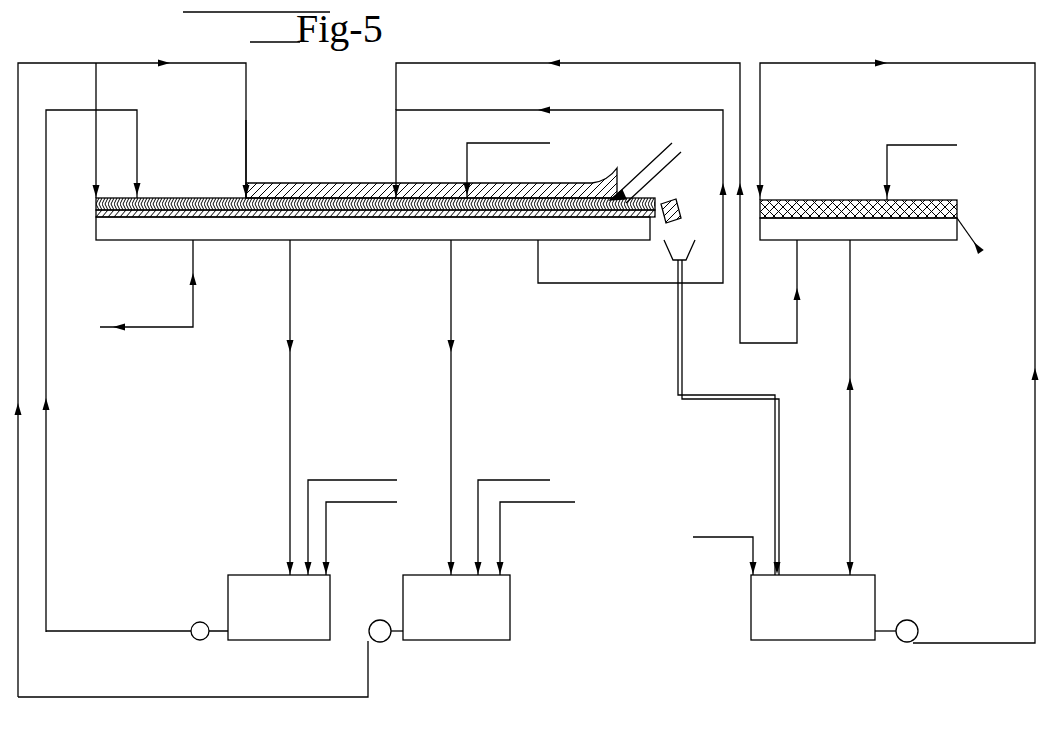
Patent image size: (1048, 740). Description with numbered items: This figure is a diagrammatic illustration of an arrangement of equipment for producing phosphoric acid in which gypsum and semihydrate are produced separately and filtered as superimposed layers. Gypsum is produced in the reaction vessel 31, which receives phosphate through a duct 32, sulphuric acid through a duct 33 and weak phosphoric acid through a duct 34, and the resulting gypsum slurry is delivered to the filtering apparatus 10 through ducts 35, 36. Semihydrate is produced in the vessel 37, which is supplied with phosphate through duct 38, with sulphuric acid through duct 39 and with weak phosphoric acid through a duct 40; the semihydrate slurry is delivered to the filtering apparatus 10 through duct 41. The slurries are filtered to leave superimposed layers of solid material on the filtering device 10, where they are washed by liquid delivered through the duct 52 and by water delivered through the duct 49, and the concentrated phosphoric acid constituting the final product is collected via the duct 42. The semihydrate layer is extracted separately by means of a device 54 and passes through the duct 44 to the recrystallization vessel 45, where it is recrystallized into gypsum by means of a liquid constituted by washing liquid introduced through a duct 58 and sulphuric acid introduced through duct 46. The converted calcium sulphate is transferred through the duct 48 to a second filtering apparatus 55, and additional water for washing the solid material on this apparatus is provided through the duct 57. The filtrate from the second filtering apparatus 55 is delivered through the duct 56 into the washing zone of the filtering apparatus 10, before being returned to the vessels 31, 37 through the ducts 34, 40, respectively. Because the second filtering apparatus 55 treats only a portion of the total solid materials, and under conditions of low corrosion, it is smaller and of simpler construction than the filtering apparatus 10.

The filtering apparatus 10 is at (150, 243).
The reaction vessel 31 is at (462, 614).
The duct 32 is at (540, 502).
The duct 33 is at (505, 480).
The duct 34 is at (451, 425).
The duct 35 is at (96, 160).
The duct 36 is at (246, 130).
The vessel 37 is at (264, 614).
The duct 38 is at (360, 502).
The duct 39 is at (340, 480).
The duct 40 is at (290, 500).
The duct 41 is at (137, 160).
The duct 42 is at (133, 329).
The duct 44 is at (774, 470).
The recrystallization vessel 45 is at (805, 622).
The duct 46 is at (739, 537).
The duct 48 is at (760, 160).
The duct 49 is at (467, 143).
The duct 52 is at (590, 110).
The device 54 is at (654, 168).
The second filtering apparatus 55 is at (903, 234).
The duct 56 is at (588, 63).
The duct 57 is at (887, 145).
The duct 58 is at (850, 485).